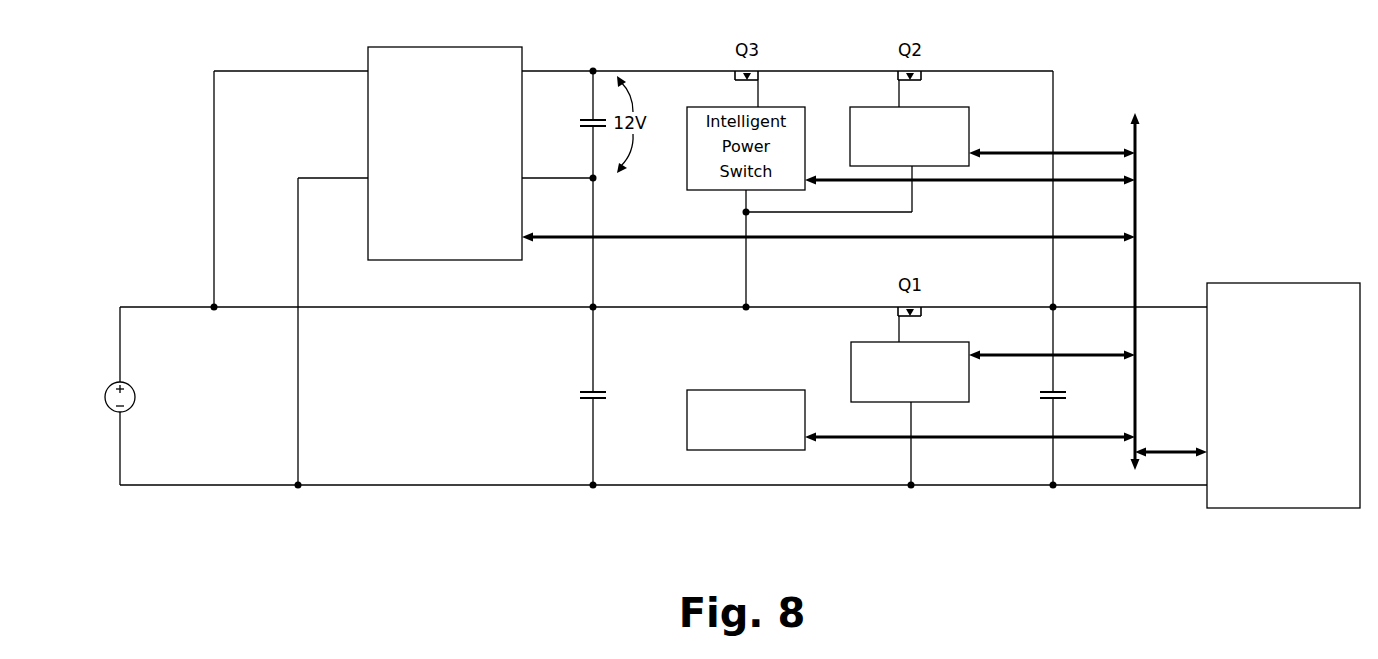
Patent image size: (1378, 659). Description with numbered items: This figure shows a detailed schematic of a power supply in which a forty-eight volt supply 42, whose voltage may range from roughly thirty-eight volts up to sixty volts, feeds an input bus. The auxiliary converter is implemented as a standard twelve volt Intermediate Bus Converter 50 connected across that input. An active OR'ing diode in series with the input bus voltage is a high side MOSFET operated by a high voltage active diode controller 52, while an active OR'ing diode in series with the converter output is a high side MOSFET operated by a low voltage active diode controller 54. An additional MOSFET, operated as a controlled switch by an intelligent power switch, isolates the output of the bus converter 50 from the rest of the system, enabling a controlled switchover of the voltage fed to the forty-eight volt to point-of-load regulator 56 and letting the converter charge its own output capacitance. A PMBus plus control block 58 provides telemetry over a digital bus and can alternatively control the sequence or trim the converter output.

The 48-V supply 42 is at (105, 381).
The Intermediate Bus Converter 50 is at (422, 46).
The high voltage active diode controller 52 is at (848, 365).
The low voltage active diode controller 54 is at (960, 107).
The 48V-to-PoL regulator 56 is at (1312, 283).
The PMBus+Control building block 58 is at (742, 390).